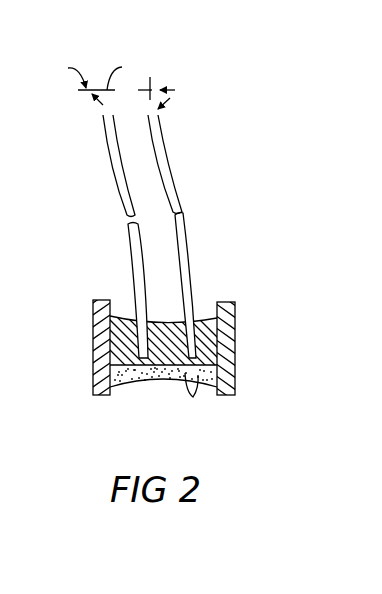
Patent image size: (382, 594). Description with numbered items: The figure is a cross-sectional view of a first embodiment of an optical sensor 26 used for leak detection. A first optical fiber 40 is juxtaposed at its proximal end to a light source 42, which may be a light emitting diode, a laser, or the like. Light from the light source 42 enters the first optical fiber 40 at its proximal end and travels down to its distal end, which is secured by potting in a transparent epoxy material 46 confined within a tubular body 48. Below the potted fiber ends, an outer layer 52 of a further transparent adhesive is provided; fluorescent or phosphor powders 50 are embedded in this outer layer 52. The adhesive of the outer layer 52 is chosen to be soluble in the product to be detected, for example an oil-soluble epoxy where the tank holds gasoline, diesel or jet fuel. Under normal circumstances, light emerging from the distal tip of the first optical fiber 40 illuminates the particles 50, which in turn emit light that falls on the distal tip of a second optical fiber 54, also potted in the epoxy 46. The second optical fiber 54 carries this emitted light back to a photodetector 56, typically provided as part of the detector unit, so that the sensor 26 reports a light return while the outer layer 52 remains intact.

The optical sensor 26 is at (78, 333).
The first optical fiber 40 is at (192, 257).
The light source 42 is at (170, 77).
The transparent epoxy material 46 is at (205, 318).
The tubular body 48 is at (235, 345).
The fluorescent or phosphor powders 50 is at (189, 400).
The outer layer 52 is at (143, 385).
The second optical fiber 54 is at (129, 250).
The photodetector 56 is at (95, 67).